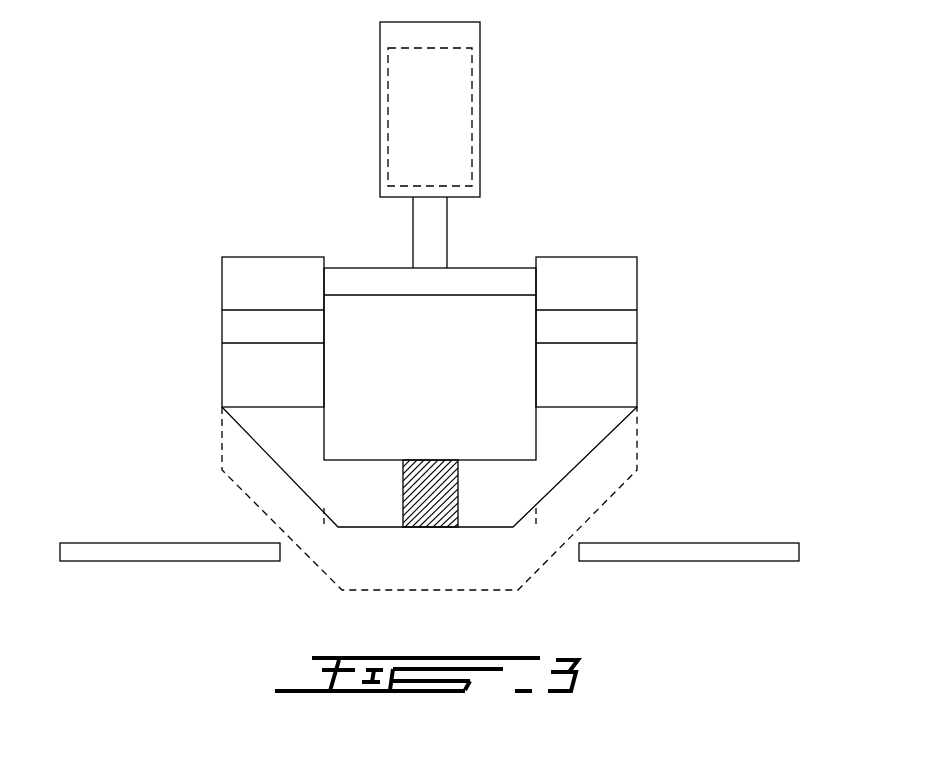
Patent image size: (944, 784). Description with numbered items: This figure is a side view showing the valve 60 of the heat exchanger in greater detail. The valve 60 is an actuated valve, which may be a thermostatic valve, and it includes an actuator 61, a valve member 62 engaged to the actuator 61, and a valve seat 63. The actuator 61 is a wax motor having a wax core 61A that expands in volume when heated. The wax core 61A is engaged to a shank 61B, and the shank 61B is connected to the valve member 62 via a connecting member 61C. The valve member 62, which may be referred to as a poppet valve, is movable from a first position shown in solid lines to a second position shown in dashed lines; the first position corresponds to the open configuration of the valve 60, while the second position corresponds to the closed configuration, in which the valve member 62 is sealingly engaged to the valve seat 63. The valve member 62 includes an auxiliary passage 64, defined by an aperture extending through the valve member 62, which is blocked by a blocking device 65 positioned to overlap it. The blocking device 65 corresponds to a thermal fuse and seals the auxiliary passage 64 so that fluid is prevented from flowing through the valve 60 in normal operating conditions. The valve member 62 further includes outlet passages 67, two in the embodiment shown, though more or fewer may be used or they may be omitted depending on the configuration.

The valve 60 is at (713, 207).
The actuator 61 is at (480, 62).
The wax core 61A is at (472, 138).
The shank 61B is at (435, 227).
The connecting member 61C is at (362, 280).
The valve member 62 is at (190, 388).
The valve seat 63 is at (158, 561).
The auxiliary passage 64 is at (458, 494).
The blocking device 65 is at (435, 505).
The outlet passages 67 is at (275, 309).